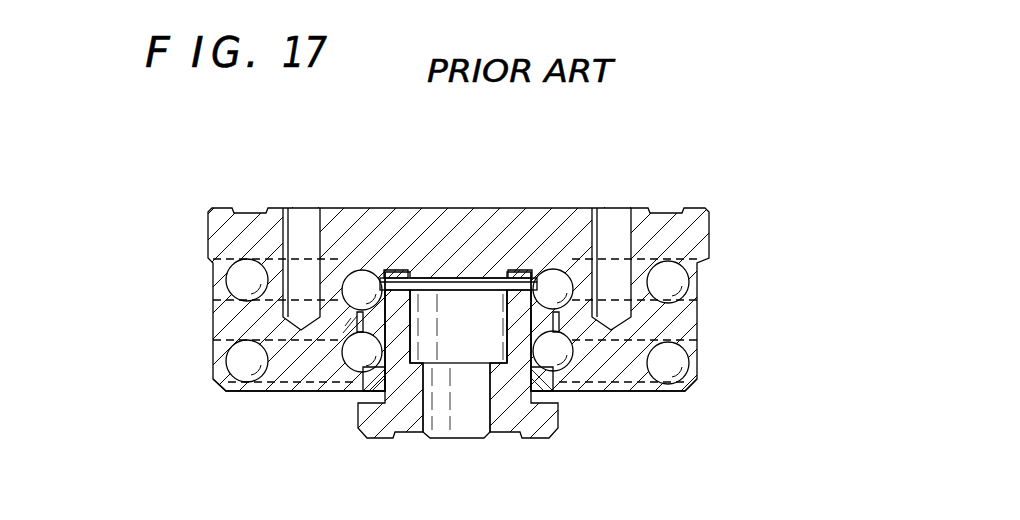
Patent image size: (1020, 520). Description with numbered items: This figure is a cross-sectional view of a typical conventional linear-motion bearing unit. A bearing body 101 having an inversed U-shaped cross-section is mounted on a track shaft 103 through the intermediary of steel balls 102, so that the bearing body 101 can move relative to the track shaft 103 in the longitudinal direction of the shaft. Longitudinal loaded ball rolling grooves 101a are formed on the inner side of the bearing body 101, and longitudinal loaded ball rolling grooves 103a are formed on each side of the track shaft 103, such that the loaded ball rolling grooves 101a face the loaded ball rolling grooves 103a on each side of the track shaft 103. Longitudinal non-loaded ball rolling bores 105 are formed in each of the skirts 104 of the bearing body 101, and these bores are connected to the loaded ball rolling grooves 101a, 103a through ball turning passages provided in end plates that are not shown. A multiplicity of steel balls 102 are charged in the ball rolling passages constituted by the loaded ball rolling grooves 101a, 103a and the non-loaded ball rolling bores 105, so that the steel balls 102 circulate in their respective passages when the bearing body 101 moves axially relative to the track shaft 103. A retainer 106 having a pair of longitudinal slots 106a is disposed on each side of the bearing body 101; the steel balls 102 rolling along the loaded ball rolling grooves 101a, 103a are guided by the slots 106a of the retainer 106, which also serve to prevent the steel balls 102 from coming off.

The bearing body 101 is at (456, 208).
The loaded ball rolling grooves 101a is at (354, 270).
The steel balls 102 is at (228, 278).
The track shaft 103 is at (385, 442).
The loaded ball rolling grooves 103a is at (373, 270).
The skirts 104 is at (214, 385).
The non-loaded ball rolling bores 105 is at (230, 352).
The retainer 106 is at (396, 395).
The longitudinal slots 106a is at (520, 270).